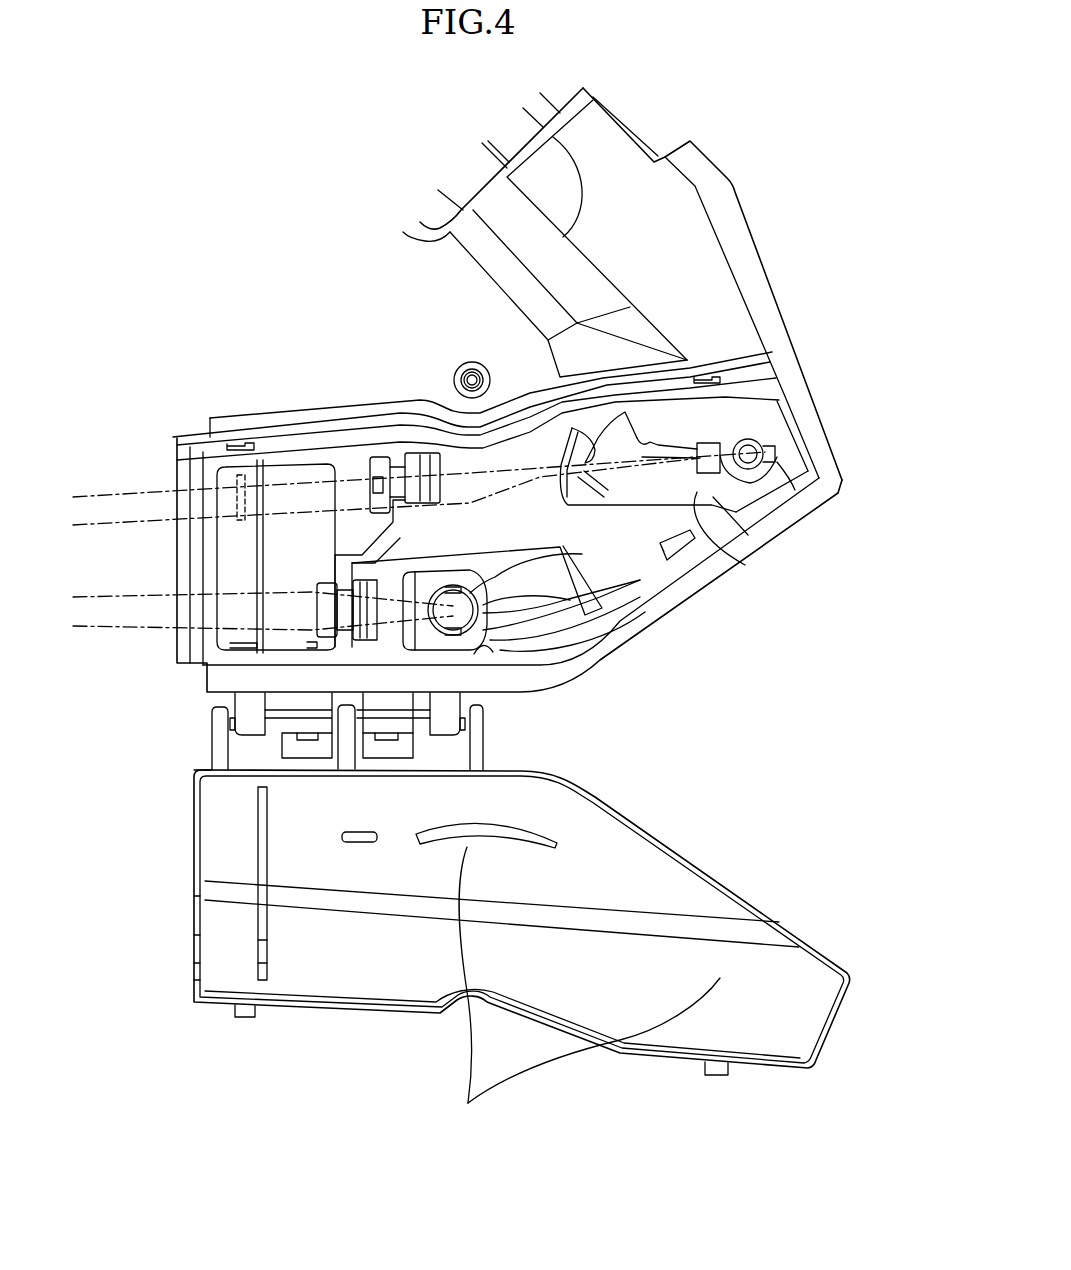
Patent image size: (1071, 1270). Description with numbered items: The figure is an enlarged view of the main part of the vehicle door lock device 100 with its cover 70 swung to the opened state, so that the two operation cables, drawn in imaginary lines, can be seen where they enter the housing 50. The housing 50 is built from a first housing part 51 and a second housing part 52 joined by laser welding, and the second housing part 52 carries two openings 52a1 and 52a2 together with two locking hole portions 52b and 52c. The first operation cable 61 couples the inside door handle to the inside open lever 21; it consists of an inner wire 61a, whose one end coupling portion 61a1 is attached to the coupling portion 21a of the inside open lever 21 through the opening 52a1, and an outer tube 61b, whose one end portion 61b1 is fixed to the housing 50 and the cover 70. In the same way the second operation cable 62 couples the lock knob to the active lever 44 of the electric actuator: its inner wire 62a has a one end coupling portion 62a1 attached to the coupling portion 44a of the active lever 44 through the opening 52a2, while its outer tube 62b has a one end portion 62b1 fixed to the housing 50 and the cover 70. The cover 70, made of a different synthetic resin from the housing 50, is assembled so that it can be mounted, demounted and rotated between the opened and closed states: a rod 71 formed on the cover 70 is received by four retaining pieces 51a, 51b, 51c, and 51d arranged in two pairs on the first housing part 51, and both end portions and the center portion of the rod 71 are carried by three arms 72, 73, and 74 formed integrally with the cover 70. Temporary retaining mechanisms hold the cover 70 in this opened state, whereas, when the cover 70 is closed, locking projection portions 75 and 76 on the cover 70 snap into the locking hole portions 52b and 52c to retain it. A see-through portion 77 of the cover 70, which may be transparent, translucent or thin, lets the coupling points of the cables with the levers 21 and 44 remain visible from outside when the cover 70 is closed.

The vehicle door lock device 100 is at (736, 154).
The housing 50 is at (758, 253).
The first housing part 51 is at (707, 589).
The second housing part 52 is at (690, 600).
The opening 52a1 is at (745, 565).
The opening 52a2 is at (486, 650).
The locking hole portion 52b is at (242, 443).
The locking hole portion 52c is at (708, 376).
The inside open lever 21 is at (752, 410).
The coupling portion 21a is at (772, 454).
The active lever 44 is at (562, 548).
The coupling portion 44a is at (493, 577).
The operation cable 61 is at (115, 493).
The inner wire 61a is at (500, 478).
The one end coupling portion 61a1 is at (792, 488).
The outer tube 61b is at (108, 524).
The one end portion 61b1 is at (397, 475).
The operation cable 62 is at (115, 597).
The inner wire 62a is at (400, 600).
The one end coupling portion 62a1 is at (497, 632).
The outer tube 62b is at (105, 628).
The one end portion 62b1 is at (335, 610).
The cover 70 is at (693, 857).
The rod 71 is at (423, 728).
The arm 72 is at (218, 738).
The arm 73 is at (347, 758).
The arm 74 is at (478, 745).
The locking projection portion 75 is at (247, 1018).
The locking projection portion 76 is at (717, 1078).
The see-through portion 77 is at (589, 987).
The retaining piece 51a is at (252, 735).
The retaining piece 51b is at (300, 753).
The retaining piece 51c is at (373, 753).
The retaining piece 51d is at (450, 731).